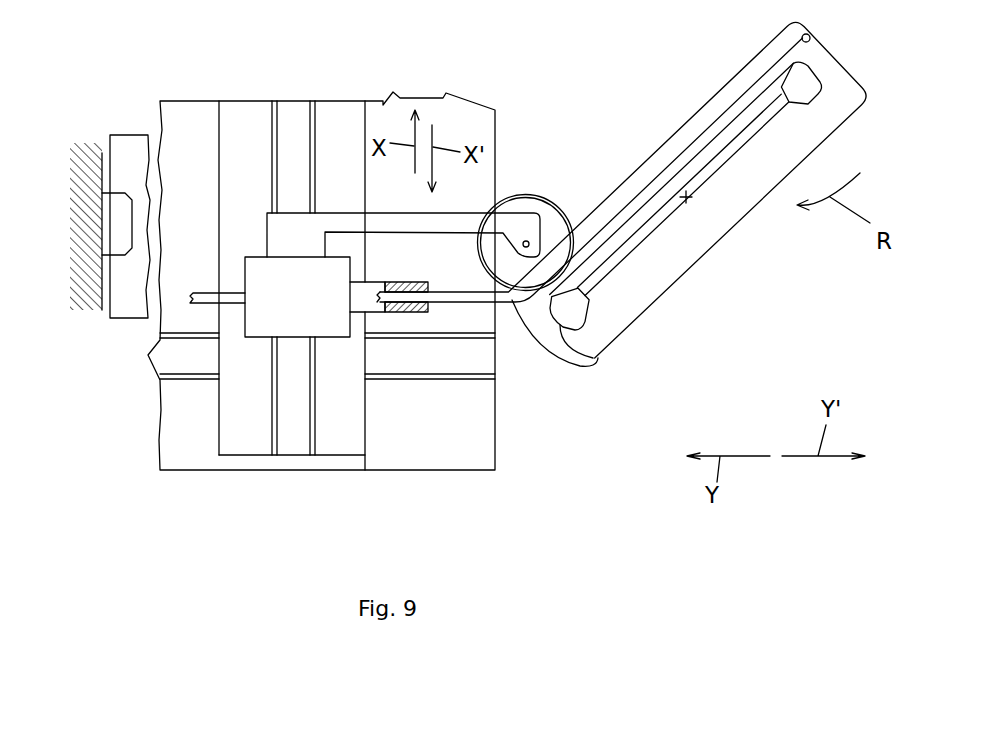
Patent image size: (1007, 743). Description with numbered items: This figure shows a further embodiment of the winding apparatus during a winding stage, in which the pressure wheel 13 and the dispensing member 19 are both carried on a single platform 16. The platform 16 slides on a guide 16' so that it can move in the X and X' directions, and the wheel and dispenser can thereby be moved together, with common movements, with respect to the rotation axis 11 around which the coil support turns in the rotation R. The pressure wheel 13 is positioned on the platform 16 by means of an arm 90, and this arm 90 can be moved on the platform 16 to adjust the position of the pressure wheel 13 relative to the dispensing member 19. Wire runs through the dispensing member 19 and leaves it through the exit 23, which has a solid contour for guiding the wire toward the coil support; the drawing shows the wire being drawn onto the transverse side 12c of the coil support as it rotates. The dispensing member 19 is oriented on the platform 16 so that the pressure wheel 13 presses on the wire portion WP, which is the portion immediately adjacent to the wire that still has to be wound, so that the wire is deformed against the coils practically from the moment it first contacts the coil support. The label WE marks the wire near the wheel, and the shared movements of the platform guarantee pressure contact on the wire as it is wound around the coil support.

The rotation axis 11 is at (686, 196).
The transverse side 12c is at (597, 360).
The pressure wheel 13 is at (533, 207).
The platform 16 is at (270, 341).
The guide 16' is at (288, 131).
The dispensing member 19 is at (368, 287).
The exit 23 is at (437, 312).
The arm 90 is at (292, 235).
The workpiece edge WE is at (502, 295).
The wire portion WP is at (513, 297).